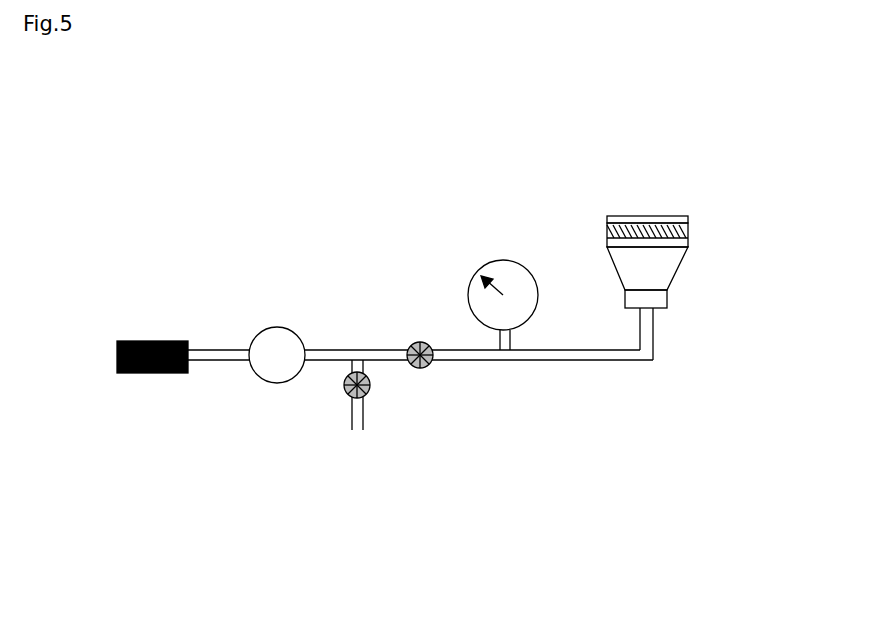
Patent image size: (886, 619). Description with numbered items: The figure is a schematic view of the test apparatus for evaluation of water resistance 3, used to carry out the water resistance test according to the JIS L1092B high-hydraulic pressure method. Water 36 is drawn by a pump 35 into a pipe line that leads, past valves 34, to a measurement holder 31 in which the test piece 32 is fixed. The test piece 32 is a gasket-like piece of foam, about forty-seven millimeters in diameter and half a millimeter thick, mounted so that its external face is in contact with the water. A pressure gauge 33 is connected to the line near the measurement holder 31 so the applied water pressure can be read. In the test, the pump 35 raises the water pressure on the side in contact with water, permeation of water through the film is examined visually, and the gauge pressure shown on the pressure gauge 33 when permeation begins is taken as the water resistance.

The test apparatus for evaluation of water resistance 3 is at (381, 199).
The measurement holder 31 is at (643, 216).
The test piece 32 is at (688, 233).
The pressure gauge 33 is at (510, 260).
The valve 34 is at (430, 367).
The pump 35 is at (273, 383).
The water 36 is at (117, 368).